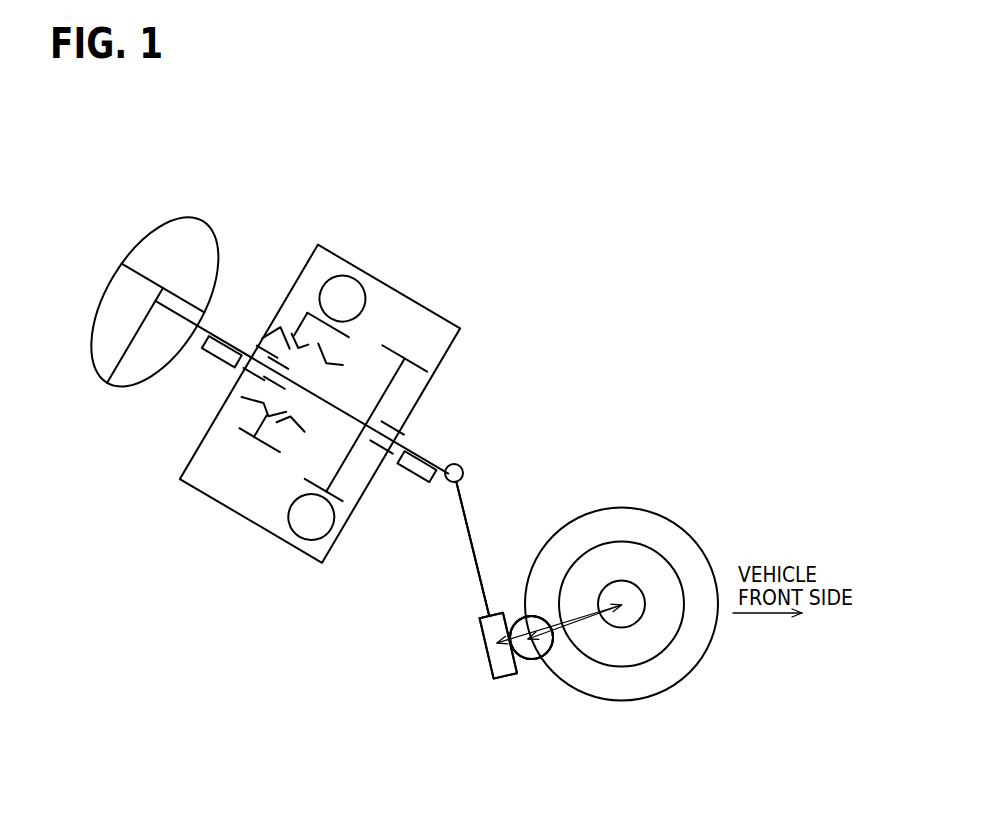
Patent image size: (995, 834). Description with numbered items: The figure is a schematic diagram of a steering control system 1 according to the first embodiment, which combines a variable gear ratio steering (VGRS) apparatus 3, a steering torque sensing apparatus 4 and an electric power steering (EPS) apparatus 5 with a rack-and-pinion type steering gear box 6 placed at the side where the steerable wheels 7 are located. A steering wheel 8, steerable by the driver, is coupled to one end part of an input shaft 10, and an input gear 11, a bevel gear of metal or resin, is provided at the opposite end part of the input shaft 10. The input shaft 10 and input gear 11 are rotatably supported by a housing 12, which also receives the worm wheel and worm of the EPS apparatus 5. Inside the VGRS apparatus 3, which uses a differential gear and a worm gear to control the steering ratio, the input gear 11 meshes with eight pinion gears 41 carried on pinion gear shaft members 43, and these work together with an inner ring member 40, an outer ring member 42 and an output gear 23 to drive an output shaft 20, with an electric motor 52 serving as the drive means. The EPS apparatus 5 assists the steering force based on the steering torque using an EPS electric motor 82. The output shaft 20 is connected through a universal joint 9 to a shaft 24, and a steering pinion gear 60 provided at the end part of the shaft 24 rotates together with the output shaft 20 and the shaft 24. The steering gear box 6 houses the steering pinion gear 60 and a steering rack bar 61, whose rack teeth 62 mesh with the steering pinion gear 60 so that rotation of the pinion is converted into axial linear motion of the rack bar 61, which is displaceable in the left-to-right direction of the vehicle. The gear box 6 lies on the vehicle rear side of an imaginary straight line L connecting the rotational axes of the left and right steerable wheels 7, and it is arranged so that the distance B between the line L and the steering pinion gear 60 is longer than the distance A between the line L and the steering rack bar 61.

The steering control system 1 is at (590, 307).
The variable gear ratio steering (VGRS) apparatus 3 is at (260, 430).
The steering torque sensing apparatus 4 is at (280, 450).
The electric power steering (EPS) apparatus 5 is at (410, 362).
The steering gear box 6 is at (482, 645).
The steerable wheels 7 is at (677, 522).
The steering wheel 8 is at (163, 218).
The universal joint 9 is at (449, 489).
The input shaft 10 is at (242, 341).
The input gear 11 is at (243, 393).
The housing 12 is at (313, 566).
The output shaft 20 is at (426, 456).
The output gear 23 is at (345, 365).
The shaft 24 is at (475, 545).
The inner ring member 40 is at (292, 363).
The pinion gears 41 is at (265, 412).
The outer ring member 42 is at (320, 293).
The pinion gear shaft members 43 is at (268, 400).
The electric motor 52 is at (357, 280).
The steering pinion gear 60 is at (487, 677).
The steering rack bar 61 is at (528, 664).
The rack teeth 62 is at (510, 675).
The EPS electric motor 82 is at (293, 530).
The distance between line L and steering rack bar A is at (545, 655).
The imaginary straight line L is at (622, 606).
The distance between line L and steering pinion gear B is at (516, 618).